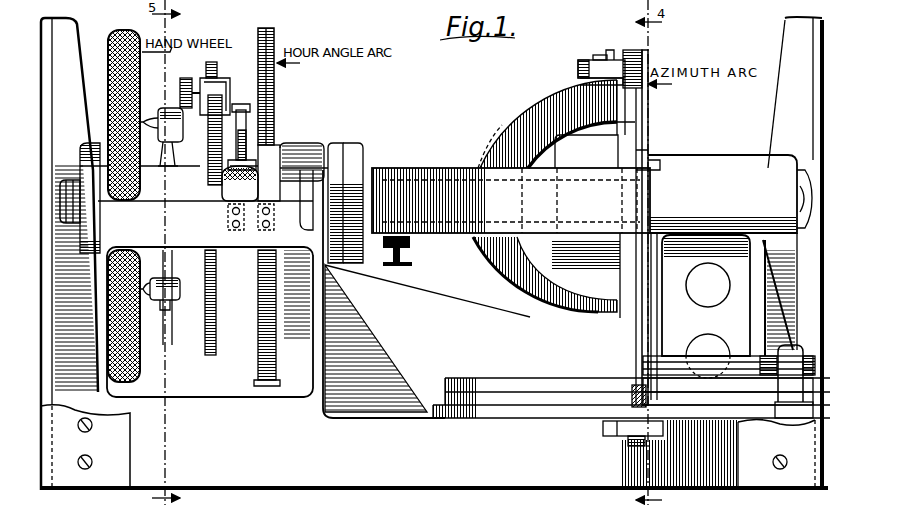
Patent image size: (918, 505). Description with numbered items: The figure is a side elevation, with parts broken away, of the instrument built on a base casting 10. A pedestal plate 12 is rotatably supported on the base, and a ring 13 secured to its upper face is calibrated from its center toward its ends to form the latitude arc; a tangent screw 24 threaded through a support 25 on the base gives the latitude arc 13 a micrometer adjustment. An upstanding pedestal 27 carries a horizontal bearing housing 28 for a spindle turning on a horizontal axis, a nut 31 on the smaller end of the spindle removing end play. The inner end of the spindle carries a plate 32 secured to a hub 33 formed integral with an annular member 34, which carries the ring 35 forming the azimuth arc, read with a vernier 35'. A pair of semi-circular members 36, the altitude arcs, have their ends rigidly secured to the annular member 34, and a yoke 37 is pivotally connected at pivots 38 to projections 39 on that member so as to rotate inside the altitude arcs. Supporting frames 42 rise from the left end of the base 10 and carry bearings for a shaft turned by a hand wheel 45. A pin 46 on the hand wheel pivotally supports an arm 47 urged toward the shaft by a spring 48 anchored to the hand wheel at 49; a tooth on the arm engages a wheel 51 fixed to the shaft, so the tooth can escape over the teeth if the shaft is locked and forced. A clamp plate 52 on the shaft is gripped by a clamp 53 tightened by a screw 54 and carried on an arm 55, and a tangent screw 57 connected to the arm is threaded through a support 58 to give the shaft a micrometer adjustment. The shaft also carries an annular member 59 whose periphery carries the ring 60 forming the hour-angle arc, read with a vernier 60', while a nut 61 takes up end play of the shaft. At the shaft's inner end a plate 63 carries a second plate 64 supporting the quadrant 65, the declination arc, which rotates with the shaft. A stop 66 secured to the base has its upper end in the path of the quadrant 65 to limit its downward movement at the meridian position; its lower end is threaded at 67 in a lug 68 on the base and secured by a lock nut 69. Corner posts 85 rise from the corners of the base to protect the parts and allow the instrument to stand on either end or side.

The base casting 10 is at (305, 488).
The pedestal plate 12 is at (515, 400).
The ring (latitude arc) 13 is at (441, 378).
The tangent screw 24 is at (718, 362).
The support 25 is at (776, 388).
The pedestal 27 is at (722, 352).
The bearing housing 28 is at (735, 156).
The nut 31 is at (805, 168).
The plate 32 is at (560, 161).
The hub 33 is at (630, 135).
The annular member 34 is at (628, 50).
The ring (azimuth arc) 35 is at (654, 225).
The vernier 35' is at (668, 145).
The semi-circular members (altitude arcs) 36 is at (466, 266).
The yoke 37 is at (526, 106).
The pivots 38 is at (598, 47).
The projections 39 is at (582, 60).
The supporting frames 42 is at (110, 387).
The hand wheel 45 is at (128, 30).
The pin 46 is at (178, 140).
The arm 47 is at (174, 161).
The spring 48 is at (176, 294).
The spring connection 49 is at (164, 310).
The wheel 51 is at (167, 203).
The clamp plate 52 is at (211, 355).
The clamp 53 is at (215, 78).
The screw 54 is at (188, 78).
The arm (clamp arm) 55 is at (224, 100).
The tangent screw 57 is at (248, 130).
The support 58 is at (254, 152).
The annular member 59 is at (276, 92).
The ring (hour-angle arc) 60 is at (282, 207).
The vernier 60' is at (264, 214).
The nut 61 is at (70, 180).
The plate 63 is at (336, 143).
The second plate 64 is at (353, 143).
The quadrant (declination arc) 65 is at (652, 166).
The stop 66 is at (640, 322).
The threaded portion 67 is at (626, 447).
The lug 68 is at (618, 431).
The lock nut 69 is at (638, 412).
The corner posts 85 is at (795, 45).